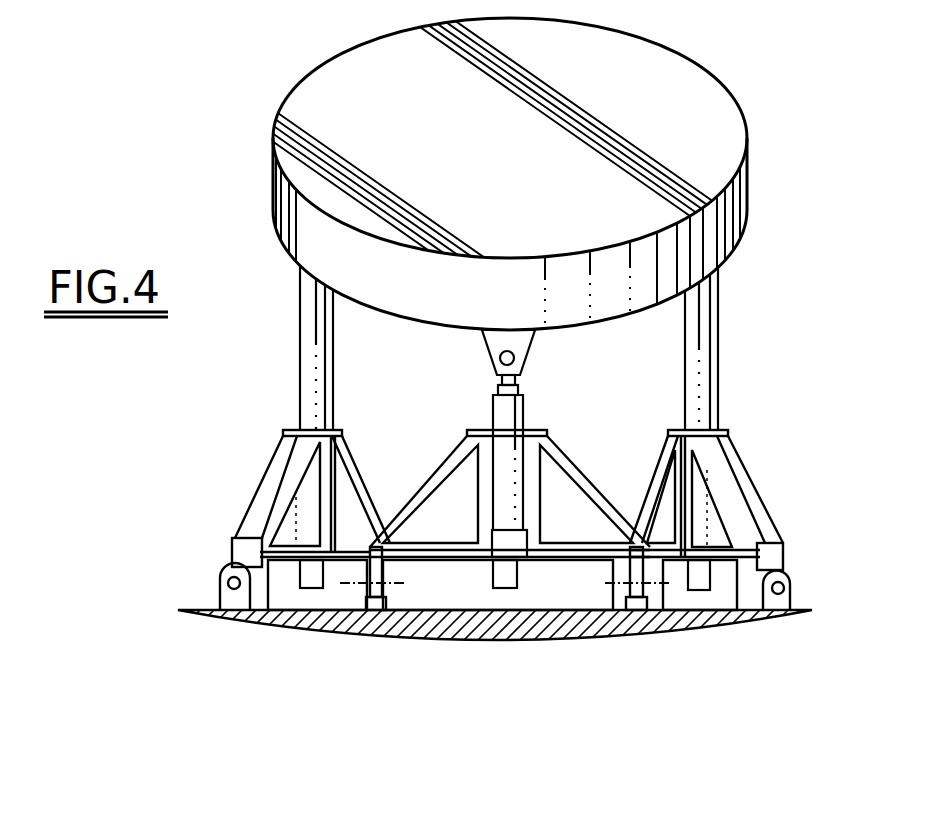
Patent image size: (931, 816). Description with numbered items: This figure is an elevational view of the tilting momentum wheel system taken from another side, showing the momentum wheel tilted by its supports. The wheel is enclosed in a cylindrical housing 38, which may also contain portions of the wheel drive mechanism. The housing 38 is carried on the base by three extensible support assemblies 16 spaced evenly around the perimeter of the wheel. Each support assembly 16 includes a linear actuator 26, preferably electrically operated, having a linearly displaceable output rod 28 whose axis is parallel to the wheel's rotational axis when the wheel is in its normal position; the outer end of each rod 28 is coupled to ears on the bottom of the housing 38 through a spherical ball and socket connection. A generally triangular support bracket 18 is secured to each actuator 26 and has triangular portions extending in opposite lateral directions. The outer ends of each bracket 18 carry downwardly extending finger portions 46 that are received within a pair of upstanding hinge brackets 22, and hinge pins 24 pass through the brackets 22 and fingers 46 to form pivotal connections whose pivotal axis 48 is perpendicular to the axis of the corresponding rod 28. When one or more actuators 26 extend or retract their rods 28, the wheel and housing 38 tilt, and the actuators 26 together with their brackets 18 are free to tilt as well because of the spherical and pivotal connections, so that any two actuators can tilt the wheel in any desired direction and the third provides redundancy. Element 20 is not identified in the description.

The extensible support assembly 16 is at (256, 425).
The triangular support bracket 18 is at (440, 465).
The leg member 20 is at (282, 520).
The hinge bracket 22 is at (218, 583).
The hinge pin 24 is at (222, 570).
The linear actuator 26 is at (492, 427).
The output rod 28 is at (298, 286).
The cylindrical housing 38 is at (333, 59).
The finger portion 46 is at (370, 613).
The pivotal axis 48 is at (403, 585).